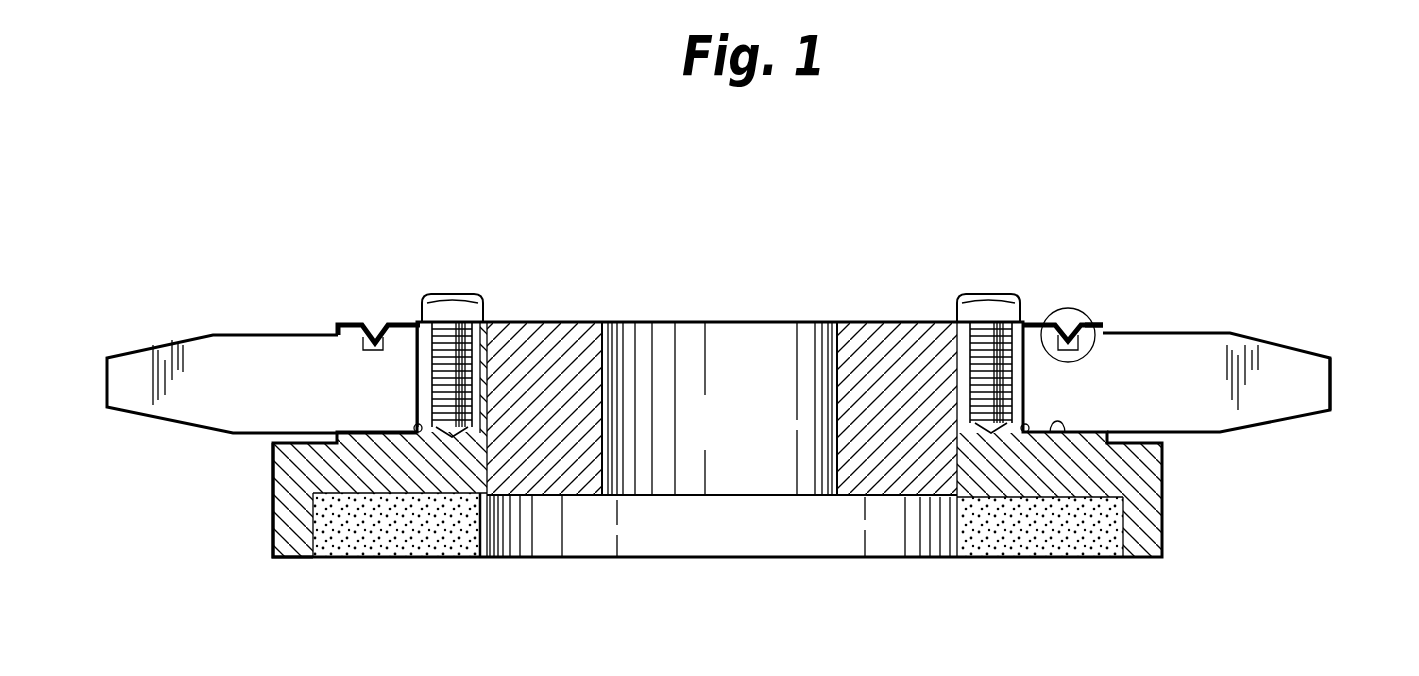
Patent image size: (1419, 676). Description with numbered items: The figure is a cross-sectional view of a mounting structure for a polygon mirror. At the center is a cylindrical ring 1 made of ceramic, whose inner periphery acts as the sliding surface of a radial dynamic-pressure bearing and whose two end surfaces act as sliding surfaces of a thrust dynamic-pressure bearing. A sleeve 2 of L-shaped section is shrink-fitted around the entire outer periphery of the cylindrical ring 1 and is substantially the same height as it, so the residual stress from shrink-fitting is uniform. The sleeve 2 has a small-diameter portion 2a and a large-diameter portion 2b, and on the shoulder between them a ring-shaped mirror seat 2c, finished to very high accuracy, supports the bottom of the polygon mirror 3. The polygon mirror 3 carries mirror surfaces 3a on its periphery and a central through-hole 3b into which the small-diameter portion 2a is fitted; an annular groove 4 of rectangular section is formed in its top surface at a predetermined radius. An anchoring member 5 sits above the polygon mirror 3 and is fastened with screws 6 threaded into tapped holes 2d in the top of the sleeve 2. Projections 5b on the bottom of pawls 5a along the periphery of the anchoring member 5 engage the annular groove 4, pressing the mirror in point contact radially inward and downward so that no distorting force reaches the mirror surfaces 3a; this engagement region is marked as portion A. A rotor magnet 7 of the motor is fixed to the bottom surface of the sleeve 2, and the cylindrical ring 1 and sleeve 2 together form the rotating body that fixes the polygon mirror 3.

The cylindrical ring 1 is at (903, 342).
The sleeve 2 is at (1163, 523).
The small-diameter portion 2a is at (417, 380).
The large-diameter portion 2b is at (295, 500).
The mirror seat 2c is at (1058, 425).
The tapped holes 2d is at (1000, 345).
The polygon mirror 3 is at (1180, 345).
The mirror surfaces 3a is at (1333, 372).
The through-hole 3b is at (400, 320).
The annular groove 4 is at (1085, 347).
The anchoring member 5 is at (1042, 320).
The pawls 5a is at (1100, 322).
The projections 5b is at (1060, 335).
The screws 6 is at (970, 297).
The rotor magnet 7 is at (1068, 560).
The portion A is at (1082, 360).